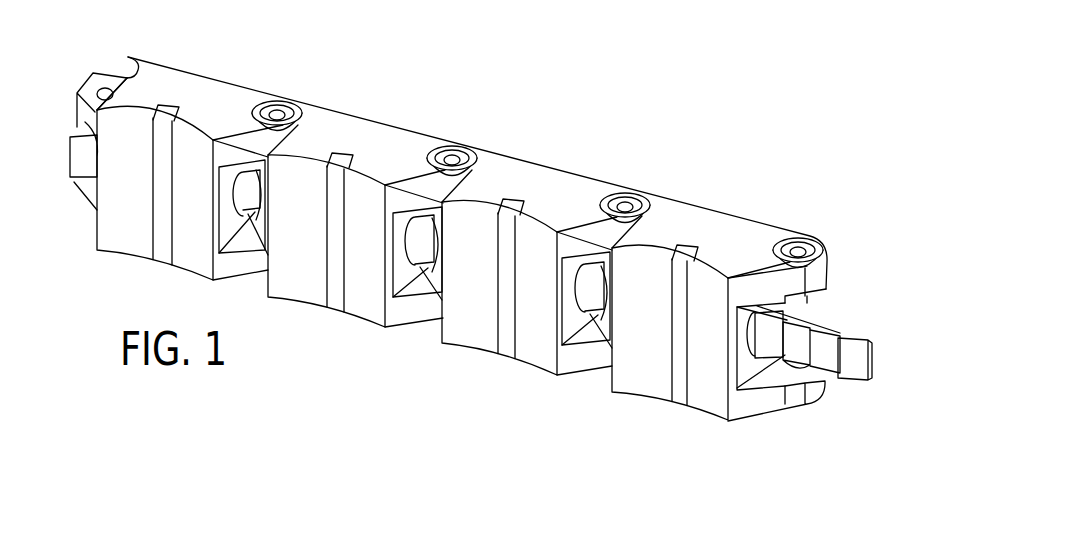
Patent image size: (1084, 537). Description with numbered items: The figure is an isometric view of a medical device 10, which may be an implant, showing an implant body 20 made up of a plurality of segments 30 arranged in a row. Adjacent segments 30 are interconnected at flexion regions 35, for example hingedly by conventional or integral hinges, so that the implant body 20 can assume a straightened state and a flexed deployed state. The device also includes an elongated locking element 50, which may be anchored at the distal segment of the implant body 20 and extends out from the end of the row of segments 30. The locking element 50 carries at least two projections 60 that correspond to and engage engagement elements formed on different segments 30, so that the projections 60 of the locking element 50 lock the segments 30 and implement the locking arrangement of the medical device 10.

The medical device 10 is at (562, 113).
The implant body 20 is at (702, 219).
The segment 30 is at (294, 290).
The flexion region 35 is at (295, 110).
The elongated locking element 50 is at (873, 357).
The projection 60 is at (827, 338).